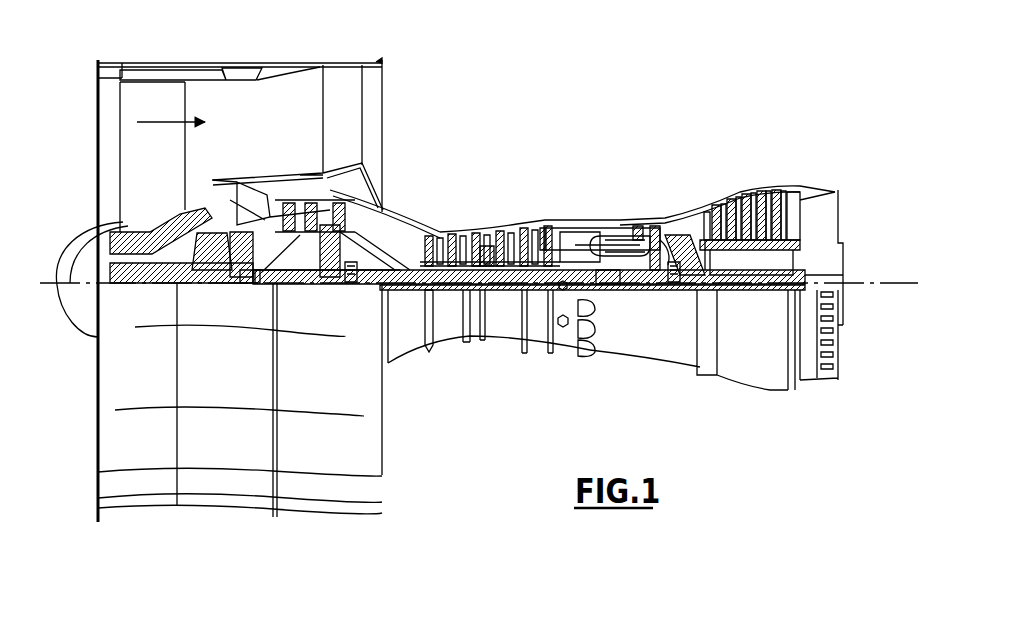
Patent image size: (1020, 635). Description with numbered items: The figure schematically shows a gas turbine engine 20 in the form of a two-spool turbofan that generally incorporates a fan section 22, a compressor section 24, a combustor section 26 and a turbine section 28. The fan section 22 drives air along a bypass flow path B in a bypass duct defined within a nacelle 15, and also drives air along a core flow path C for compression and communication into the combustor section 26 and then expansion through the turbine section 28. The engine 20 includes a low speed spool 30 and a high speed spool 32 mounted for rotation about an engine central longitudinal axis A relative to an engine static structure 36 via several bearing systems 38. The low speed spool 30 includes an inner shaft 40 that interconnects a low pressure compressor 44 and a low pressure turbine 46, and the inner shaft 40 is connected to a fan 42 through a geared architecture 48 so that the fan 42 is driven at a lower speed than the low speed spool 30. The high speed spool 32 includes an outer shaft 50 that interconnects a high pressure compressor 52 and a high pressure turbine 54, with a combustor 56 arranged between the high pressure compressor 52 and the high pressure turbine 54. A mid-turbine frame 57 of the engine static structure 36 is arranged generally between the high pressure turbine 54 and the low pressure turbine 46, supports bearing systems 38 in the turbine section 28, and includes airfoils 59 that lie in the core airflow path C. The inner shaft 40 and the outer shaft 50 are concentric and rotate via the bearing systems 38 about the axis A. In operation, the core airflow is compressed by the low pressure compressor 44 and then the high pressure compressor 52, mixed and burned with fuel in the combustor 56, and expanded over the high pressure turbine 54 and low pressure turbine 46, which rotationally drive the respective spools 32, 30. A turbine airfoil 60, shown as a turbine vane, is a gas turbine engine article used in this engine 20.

The gas turbine engine 20 is at (605, 98).
The fan section 22 is at (183, 50).
The nacelle 15 is at (242, 65).
The compressor section 24 is at (421, 210).
The combustor section 26 is at (596, 200).
The turbine section 28 is at (718, 169).
The low speed spool 30 is at (505, 292).
The high speed spool 32 is at (543, 240).
The engine static structure 36 is at (538, 355).
The bearing systems 38 is at (352, 273).
The inner shaft 40 is at (407, 348).
The fan 42 is at (171, 163).
The low pressure compressor 44 is at (327, 207).
The low pressure turbine 46 is at (748, 190).
The geared architecture 48 is at (247, 270).
The outer shaft 50 is at (600, 286).
The high pressure compressor 52 is at (488, 242).
The high pressure turbine 54 is at (655, 220).
The combustor 56 is at (597, 238).
The mid-turbine frame 57 is at (685, 210).
The airfoils 59 is at (700, 252).
The turbine airfoil 60 is at (698, 204).
The engine central longitudinal axis A is at (917, 283).
The bypass flow path B is at (158, 112).
The core flow path C is at (238, 203).